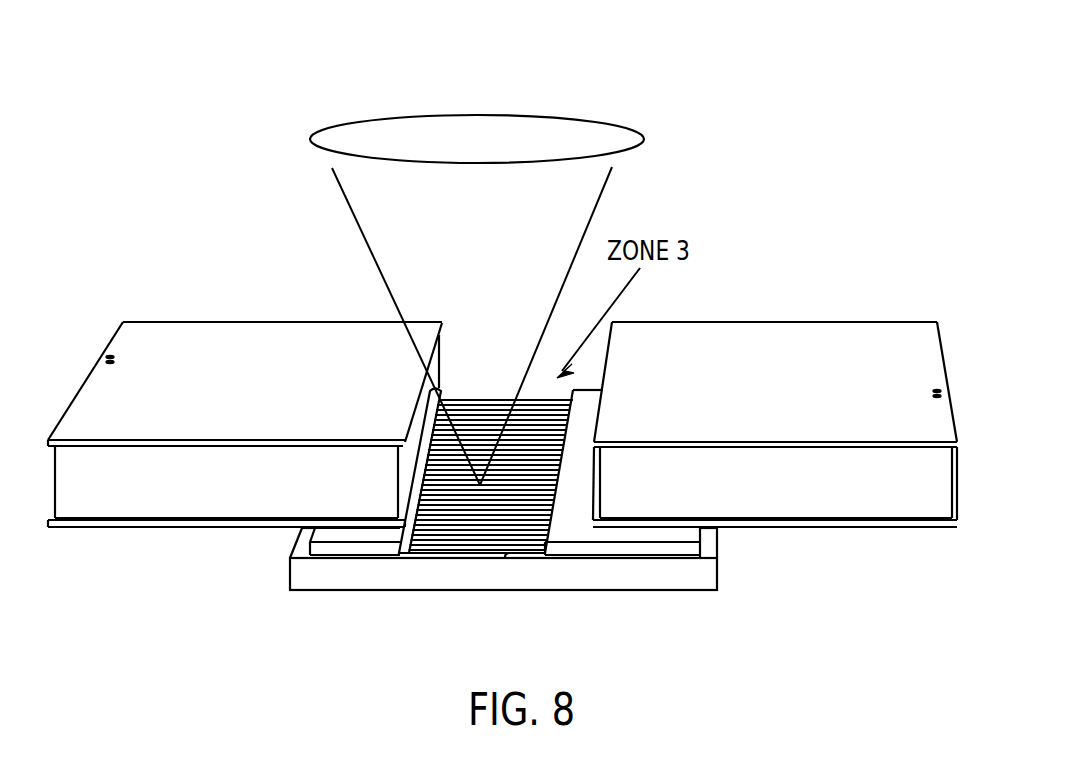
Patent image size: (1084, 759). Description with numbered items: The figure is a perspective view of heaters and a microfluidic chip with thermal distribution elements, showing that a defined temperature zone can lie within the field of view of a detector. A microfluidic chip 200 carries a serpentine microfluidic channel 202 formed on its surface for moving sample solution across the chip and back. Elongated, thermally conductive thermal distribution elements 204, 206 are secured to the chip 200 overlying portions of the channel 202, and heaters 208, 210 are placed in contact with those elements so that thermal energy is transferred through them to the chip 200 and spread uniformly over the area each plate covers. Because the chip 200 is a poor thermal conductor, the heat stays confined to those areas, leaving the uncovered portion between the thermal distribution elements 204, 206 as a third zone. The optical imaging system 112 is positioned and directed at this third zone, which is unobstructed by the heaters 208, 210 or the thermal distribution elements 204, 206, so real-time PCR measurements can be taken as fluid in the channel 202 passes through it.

The optical imaging system 112 is at (621, 126).
The microfluidic chip 200 is at (697, 578).
The microfluidic channel 202 is at (462, 550).
The thermal distribution element 204 is at (340, 550).
The thermal distribution element 206 is at (652, 550).
The heater 208 is at (876, 342).
The heater 210 is at (212, 337).